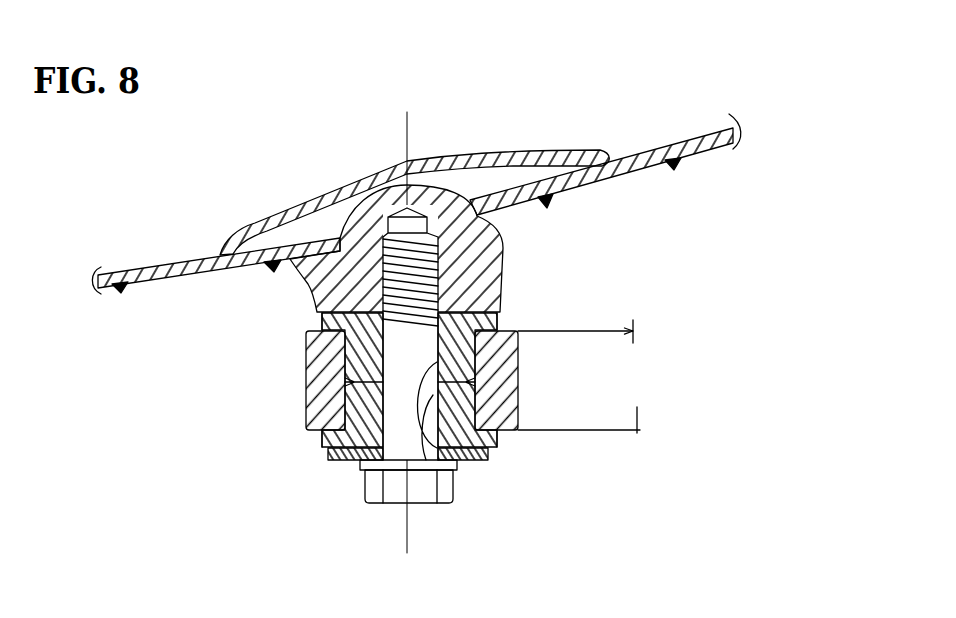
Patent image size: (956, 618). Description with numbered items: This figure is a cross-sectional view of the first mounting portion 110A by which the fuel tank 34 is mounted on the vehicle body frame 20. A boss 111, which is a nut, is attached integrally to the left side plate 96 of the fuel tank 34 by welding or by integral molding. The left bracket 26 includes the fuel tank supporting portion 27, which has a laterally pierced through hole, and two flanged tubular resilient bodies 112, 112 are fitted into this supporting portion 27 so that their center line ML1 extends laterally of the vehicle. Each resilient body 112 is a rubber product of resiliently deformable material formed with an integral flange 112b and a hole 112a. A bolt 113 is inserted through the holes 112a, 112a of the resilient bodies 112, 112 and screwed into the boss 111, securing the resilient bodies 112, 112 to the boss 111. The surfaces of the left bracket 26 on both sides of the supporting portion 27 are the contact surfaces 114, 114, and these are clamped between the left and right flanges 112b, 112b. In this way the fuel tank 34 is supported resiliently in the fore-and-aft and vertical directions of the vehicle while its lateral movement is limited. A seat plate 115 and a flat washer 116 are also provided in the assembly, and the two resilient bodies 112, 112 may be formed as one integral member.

The first mounting portion 110A is at (514, 370).
The boss 111 is at (490, 235).
The tubular resilient body 112 is at (350, 348).
The hole 112a is at (453, 497).
The flange 112b is at (500, 314).
The bolt 113 is at (418, 500).
The contact surface 114 is at (601, 332).
The seat plate 115 is at (390, 260).
The flat washer 116 is at (455, 462).
The vehicle body frame 20 is at (653, 378).
The left bracket 26 is at (618, 370).
The fuel tank supporting portion 27 is at (363, 407).
The fuel tank 34 is at (102, 296).
The left side plate 96 is at (163, 278).
The center line ML1 is at (403, 542).